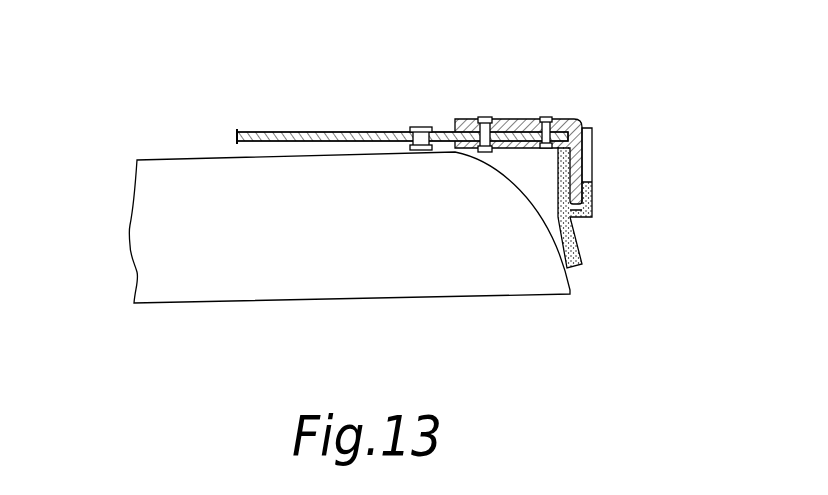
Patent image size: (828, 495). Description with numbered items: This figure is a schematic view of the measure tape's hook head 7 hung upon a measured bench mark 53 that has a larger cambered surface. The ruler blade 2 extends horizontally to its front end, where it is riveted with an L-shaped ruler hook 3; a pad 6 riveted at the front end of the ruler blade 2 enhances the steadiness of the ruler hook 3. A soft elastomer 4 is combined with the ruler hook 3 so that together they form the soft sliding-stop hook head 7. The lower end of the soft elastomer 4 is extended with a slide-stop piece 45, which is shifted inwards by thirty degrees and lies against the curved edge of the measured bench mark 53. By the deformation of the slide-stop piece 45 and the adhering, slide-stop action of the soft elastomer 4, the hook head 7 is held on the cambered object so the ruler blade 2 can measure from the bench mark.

The ruler blade 2 is at (338, 133).
The ruler hook 3 is at (512, 118).
The soft elastomer 4 is at (596, 188).
The pad 6 is at (453, 152).
The soft sliding-stop hook head 7 is at (598, 112).
The slide-stop piece 45 is at (580, 250).
The measured bench mark of a larger cambered surface 53 is at (537, 285).